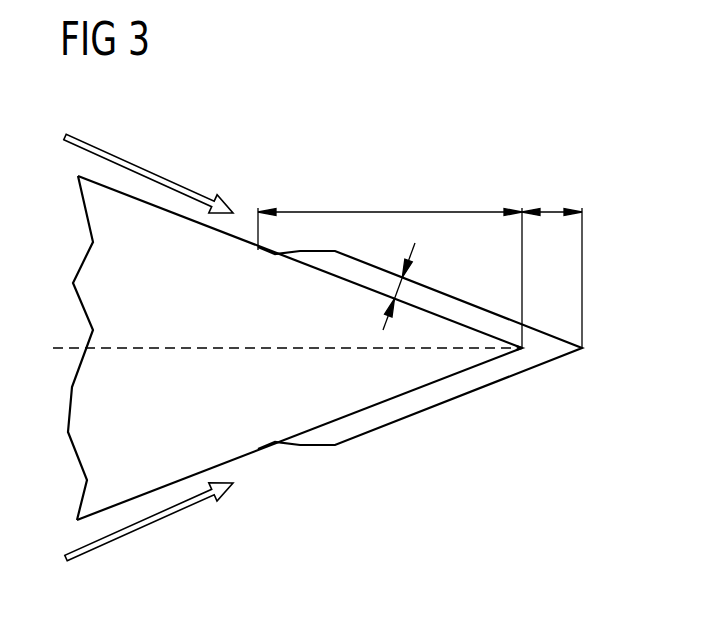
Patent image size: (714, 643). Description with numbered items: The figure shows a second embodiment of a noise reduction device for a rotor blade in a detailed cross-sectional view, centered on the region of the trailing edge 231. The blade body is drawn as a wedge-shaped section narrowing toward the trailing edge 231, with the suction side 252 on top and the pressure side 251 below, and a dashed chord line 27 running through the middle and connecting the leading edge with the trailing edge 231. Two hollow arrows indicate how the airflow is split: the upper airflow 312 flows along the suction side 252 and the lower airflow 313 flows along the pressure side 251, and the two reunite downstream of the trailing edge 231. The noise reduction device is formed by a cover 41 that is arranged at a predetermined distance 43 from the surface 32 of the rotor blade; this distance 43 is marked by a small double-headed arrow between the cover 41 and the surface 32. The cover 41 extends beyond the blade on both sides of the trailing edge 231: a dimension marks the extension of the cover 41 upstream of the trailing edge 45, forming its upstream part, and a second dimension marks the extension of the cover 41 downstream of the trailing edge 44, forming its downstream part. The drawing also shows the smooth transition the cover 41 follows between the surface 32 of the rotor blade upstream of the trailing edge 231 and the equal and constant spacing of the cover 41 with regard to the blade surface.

The chord line 27 is at (180, 348).
The surface of the rotor blade 32 is at (233, 235).
The cover 41 is at (440, 293).
The predetermined distance 43 is at (397, 288).
The extension of the cover downstream of the trailing edge 44 is at (547, 210).
The extension of the cover upstream of the trailing edge 45 is at (390, 212).
The trailing edge 231 is at (524, 351).
The pressure side 251 is at (153, 488).
The suction side 252 is at (152, 208).
The upper airflow 312 is at (135, 168).
The lower airflow 313 is at (135, 525).